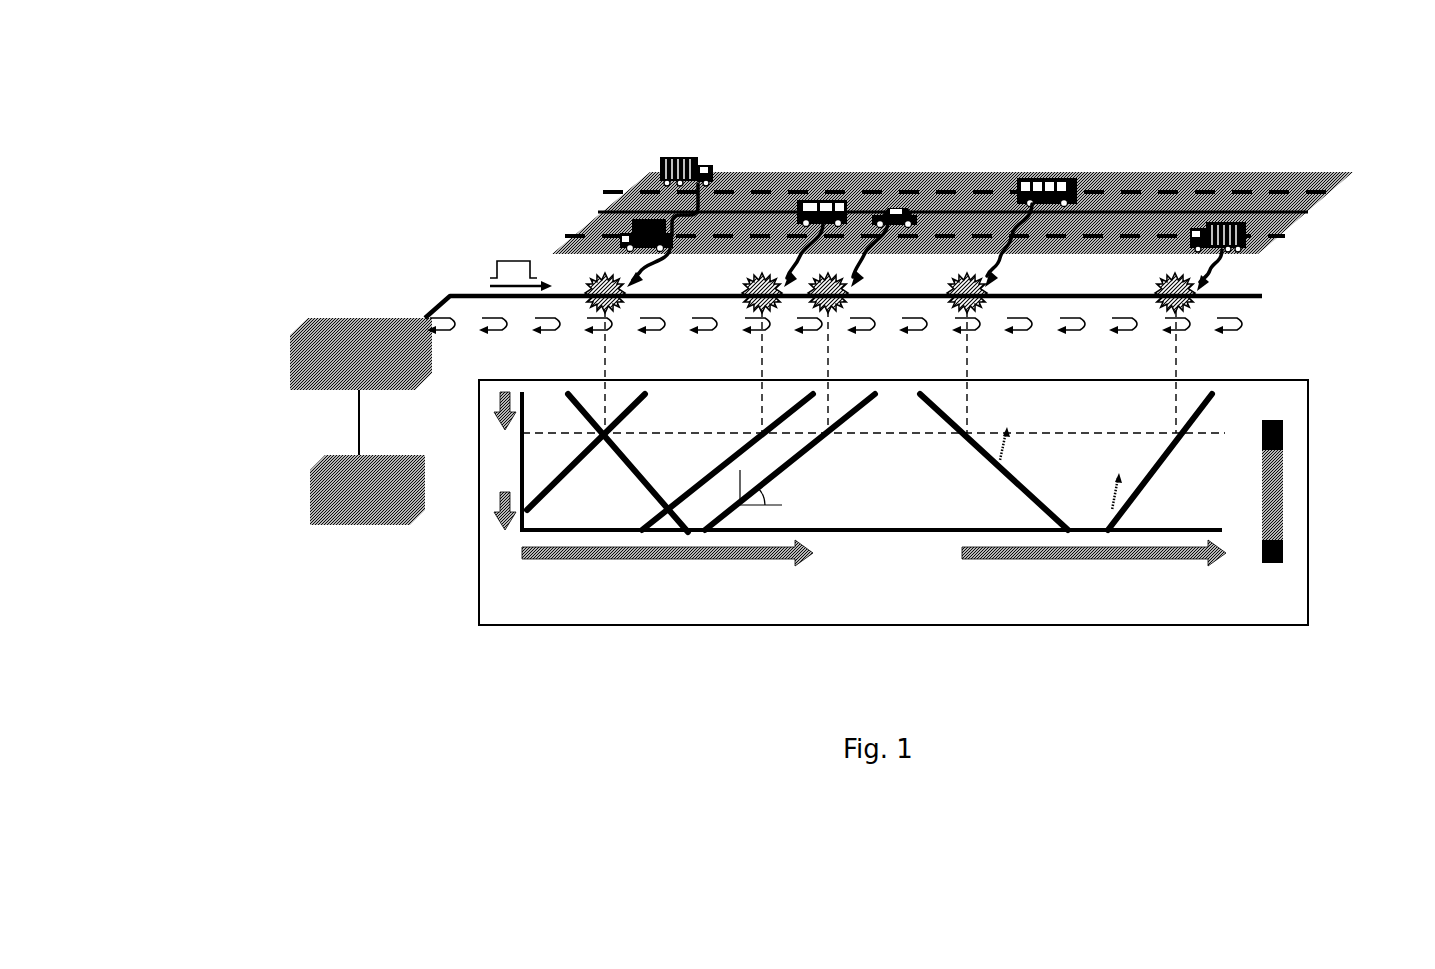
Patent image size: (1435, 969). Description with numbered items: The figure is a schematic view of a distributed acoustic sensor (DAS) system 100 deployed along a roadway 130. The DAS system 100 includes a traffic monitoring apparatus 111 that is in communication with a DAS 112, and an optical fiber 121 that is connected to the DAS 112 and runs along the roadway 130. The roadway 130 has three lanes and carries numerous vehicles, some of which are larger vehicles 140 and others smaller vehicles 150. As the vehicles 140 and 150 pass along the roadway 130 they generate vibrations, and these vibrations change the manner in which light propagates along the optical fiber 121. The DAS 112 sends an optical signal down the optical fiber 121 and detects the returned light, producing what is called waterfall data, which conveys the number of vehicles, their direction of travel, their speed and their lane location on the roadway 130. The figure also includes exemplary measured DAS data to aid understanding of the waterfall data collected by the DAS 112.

The distributed acoustic sensor (DAS) system 100 is at (142, 118).
The traffic monitoring apparatus 111 is at (330, 527).
The DAS 112 is at (305, 318).
The optical fiber 121 is at (483, 295).
The roadway 130 is at (993, 161).
The vehicles 140 is at (1288, 233).
The vehicles 150 is at (898, 188).